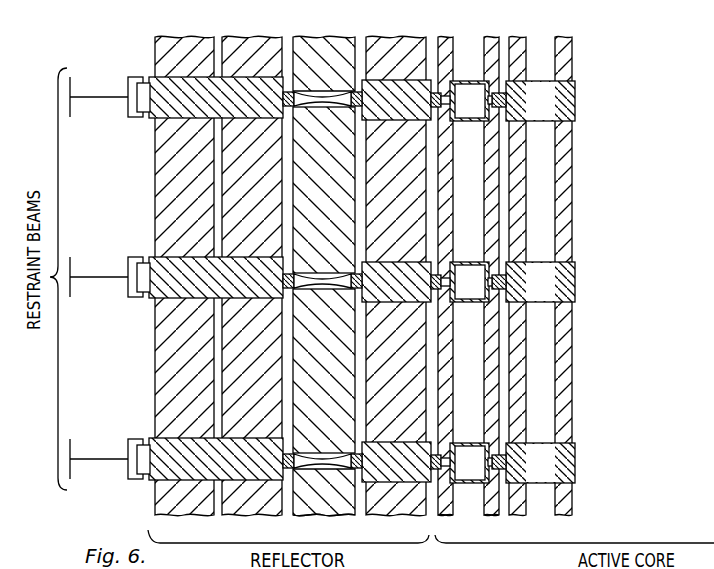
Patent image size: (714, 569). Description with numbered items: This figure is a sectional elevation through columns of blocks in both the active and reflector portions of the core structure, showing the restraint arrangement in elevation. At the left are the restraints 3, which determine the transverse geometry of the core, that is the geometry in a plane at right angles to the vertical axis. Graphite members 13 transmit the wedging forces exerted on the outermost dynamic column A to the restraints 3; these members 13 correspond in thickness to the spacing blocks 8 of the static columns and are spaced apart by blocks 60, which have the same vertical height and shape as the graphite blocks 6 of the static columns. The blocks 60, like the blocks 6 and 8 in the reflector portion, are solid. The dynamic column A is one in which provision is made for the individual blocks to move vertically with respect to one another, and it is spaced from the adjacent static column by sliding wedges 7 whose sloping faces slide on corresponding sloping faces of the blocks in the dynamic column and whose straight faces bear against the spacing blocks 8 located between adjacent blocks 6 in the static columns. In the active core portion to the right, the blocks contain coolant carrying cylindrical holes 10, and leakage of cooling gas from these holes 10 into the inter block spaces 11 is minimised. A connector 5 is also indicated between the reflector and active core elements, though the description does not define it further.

The restraint 3 is at (108, 96).
The graphite member 13 is at (175, 82).
The block 60 is at (225, 206).
The sliding wedge 7 is at (292, 92).
The dynamic column A is at (341, 42).
The spacing block 8 is at (388, 87).
The coolant containing cylindrical hole 10 is at (470, 48).
The connector 5 is at (427, 268).
The graphite block 6 is at (563, 196).
The inter block space 11 is at (358, 508).